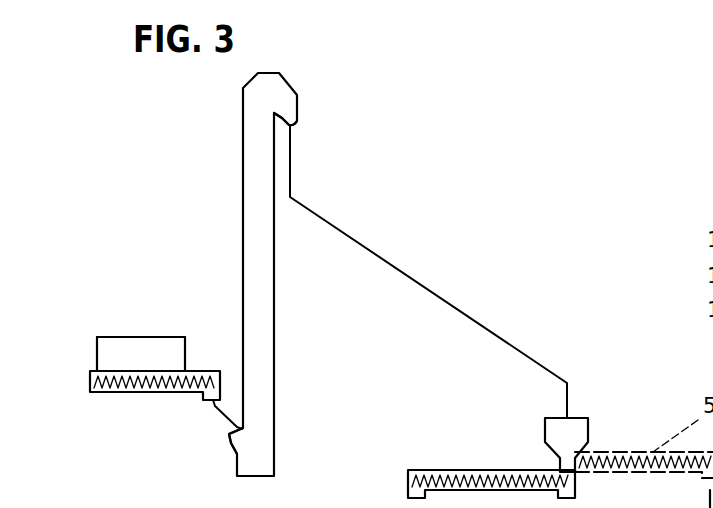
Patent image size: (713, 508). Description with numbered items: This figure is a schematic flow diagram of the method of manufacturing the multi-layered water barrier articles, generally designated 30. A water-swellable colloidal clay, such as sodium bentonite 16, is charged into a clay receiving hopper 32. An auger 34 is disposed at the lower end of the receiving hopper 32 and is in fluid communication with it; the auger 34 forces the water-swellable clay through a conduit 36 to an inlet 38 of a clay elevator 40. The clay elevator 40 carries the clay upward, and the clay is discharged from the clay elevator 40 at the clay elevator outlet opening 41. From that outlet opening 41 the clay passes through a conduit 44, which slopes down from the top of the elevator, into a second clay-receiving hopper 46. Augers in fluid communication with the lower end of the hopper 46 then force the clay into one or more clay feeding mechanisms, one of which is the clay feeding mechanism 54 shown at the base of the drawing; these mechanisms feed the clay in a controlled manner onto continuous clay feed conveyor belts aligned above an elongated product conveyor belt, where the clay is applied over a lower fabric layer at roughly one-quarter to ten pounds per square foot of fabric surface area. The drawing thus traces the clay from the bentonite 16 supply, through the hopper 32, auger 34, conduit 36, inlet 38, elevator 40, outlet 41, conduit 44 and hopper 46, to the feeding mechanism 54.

The bentonite 16 is at (112, 336).
The method of manufacturing the multi-layered articles 30 is at (550, 338).
The clay receiving hopper 32 is at (186, 340).
The auger 34 is at (183, 379).
The conduit 36 is at (227, 413).
The inlet 38 is at (241, 430).
The clay elevator 40 is at (274, 335).
The clay elevator outlet opening 41 is at (297, 124).
The conduit 44 is at (460, 310).
The clay-receiving hopper 46 is at (577, 443).
The clay feeding mechanism 54 is at (513, 489).